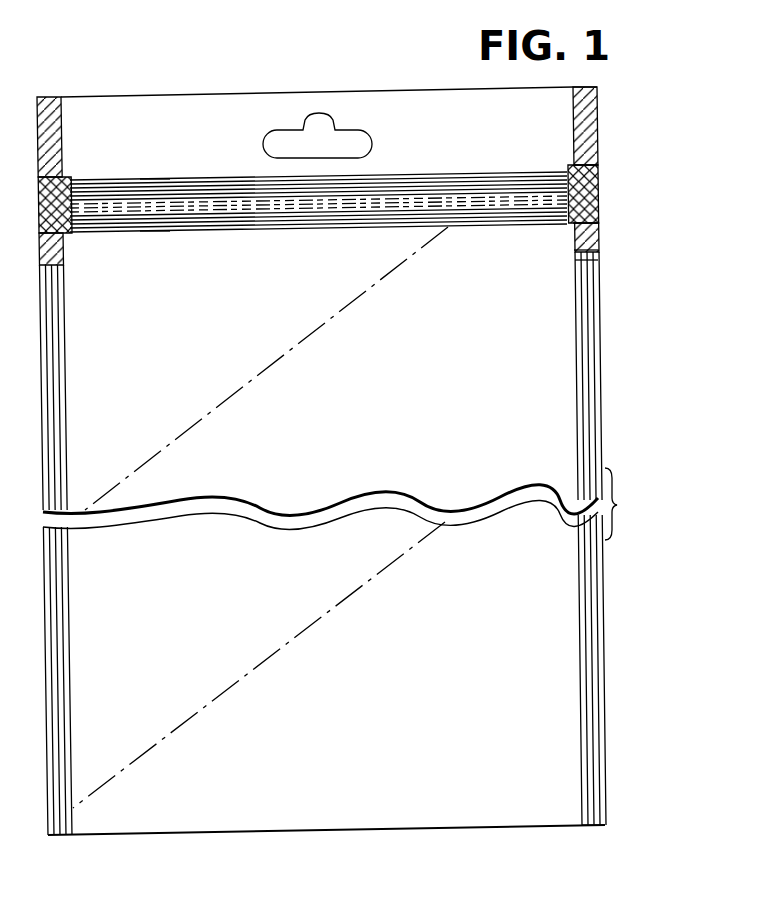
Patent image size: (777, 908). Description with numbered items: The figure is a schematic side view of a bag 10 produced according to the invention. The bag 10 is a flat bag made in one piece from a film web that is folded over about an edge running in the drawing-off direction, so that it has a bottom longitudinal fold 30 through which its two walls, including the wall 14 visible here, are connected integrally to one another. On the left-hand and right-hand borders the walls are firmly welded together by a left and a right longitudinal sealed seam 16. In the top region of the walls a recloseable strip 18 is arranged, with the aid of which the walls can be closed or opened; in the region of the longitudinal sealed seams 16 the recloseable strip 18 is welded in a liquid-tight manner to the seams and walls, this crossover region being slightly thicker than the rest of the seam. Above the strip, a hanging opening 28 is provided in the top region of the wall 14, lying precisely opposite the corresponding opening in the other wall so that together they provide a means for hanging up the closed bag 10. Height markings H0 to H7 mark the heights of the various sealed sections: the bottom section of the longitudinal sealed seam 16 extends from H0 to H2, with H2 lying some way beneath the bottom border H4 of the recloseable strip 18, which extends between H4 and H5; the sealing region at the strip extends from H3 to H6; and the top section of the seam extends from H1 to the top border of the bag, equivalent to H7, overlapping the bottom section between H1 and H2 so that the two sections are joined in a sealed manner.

The bag 10 is at (127, 79).
The wall 14 is at (545, 397).
The longitudinal sealed seam 16 is at (46, 660).
The recloseable strip 18 is at (450, 175).
The hanging opening 28 is at (356, 144).
The bottom longitudinal fold 30 is at (106, 838).
The height marking H0 is at (607, 825).
The height marking H1 is at (600, 261).
The height marking H2 is at (600, 250).
The height marking H3 is at (599, 223).
The height marking H4 is at (155, 233).
The height marking H5 is at (155, 178).
The height marking H6 is at (662, 165).
The height marking H7 is at (662, 87).